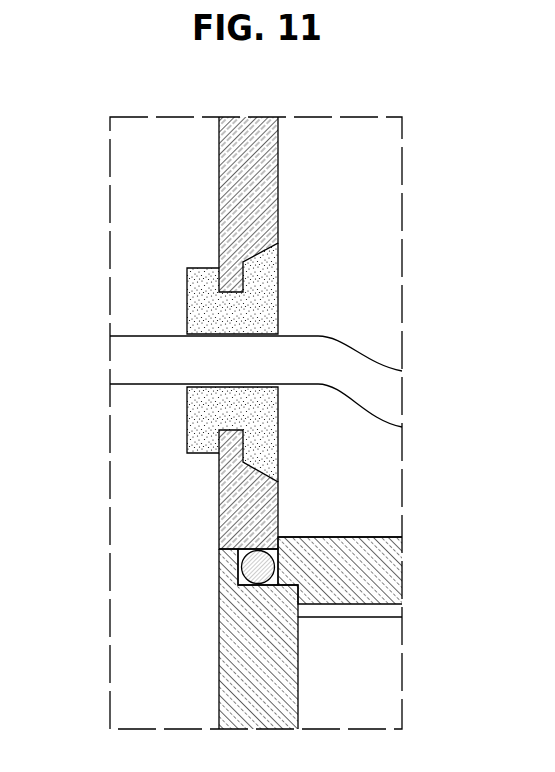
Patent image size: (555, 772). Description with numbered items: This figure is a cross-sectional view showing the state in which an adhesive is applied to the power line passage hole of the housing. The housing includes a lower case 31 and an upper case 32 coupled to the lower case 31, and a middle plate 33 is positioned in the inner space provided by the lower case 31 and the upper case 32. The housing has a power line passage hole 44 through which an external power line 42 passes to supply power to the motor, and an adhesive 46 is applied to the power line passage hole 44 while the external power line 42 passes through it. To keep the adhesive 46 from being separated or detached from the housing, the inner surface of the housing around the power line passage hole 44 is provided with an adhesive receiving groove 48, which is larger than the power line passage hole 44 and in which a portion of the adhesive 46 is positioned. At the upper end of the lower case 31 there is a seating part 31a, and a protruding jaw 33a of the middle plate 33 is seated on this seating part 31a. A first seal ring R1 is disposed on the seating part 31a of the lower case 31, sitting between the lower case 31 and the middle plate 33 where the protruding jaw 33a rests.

The upper case 32 is at (235, 186).
The power line passage hole 44 is at (233, 288).
The adhesive receiving groove 48 is at (262, 249).
The external power line 42 is at (125, 356).
The adhesive 46 is at (198, 419).
The first seal ring R1 is at (252, 567).
The seating part 31a is at (270, 586).
The lower case 31 is at (240, 663).
The middle plate 33 is at (388, 567).
The protruding jaw 33a is at (287, 560).